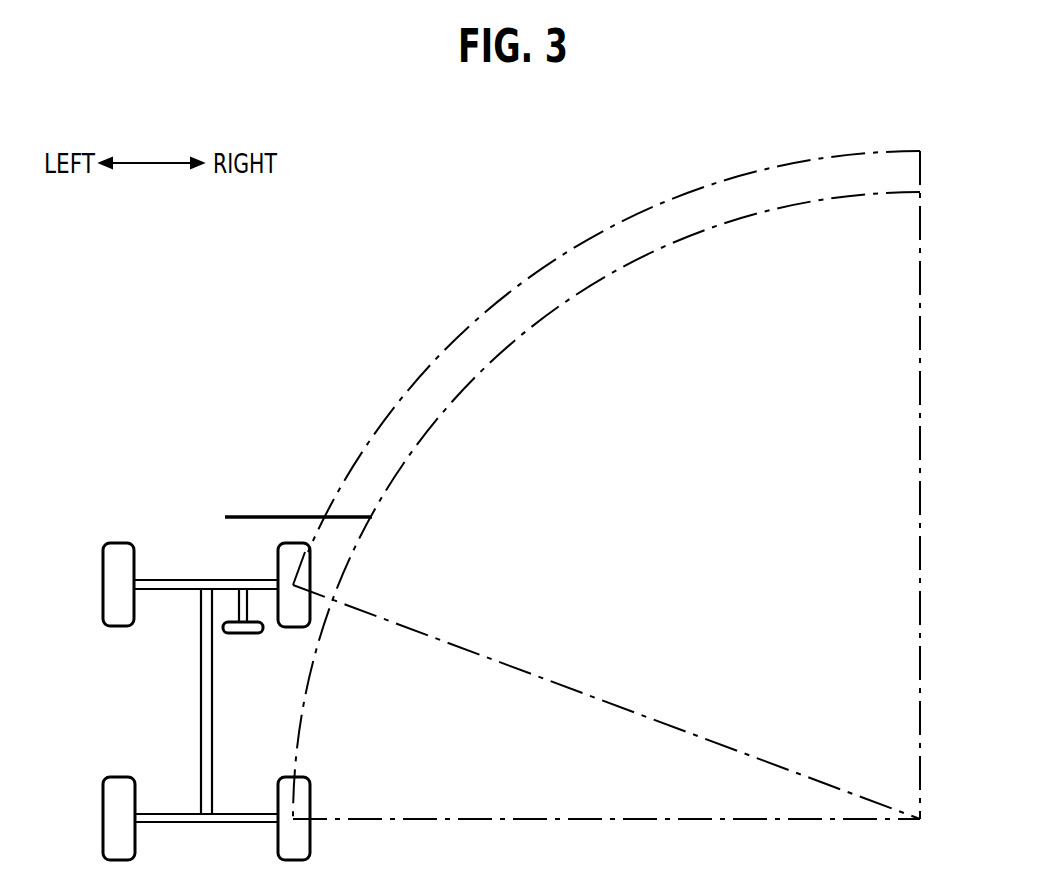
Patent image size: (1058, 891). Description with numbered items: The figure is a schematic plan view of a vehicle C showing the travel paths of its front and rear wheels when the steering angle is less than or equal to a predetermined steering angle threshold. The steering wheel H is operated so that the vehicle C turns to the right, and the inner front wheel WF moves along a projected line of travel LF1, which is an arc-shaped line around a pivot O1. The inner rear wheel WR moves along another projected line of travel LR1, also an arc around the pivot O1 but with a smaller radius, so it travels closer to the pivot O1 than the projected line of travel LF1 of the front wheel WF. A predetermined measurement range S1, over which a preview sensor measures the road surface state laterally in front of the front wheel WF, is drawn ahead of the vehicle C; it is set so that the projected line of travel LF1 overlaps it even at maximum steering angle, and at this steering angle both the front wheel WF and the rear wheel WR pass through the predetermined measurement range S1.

The vehicle C is at (147, 685).
The front wheel WF is at (282, 562).
The rear wheel WR is at (282, 841).
The steering wheel H is at (256, 633).
The predetermined measurement range S1 is at (262, 516).
The pivot O1 is at (629, 497).
The projected line of travel LF1 is at (517, 285).
The projected line of travel LR1 is at (545, 312).